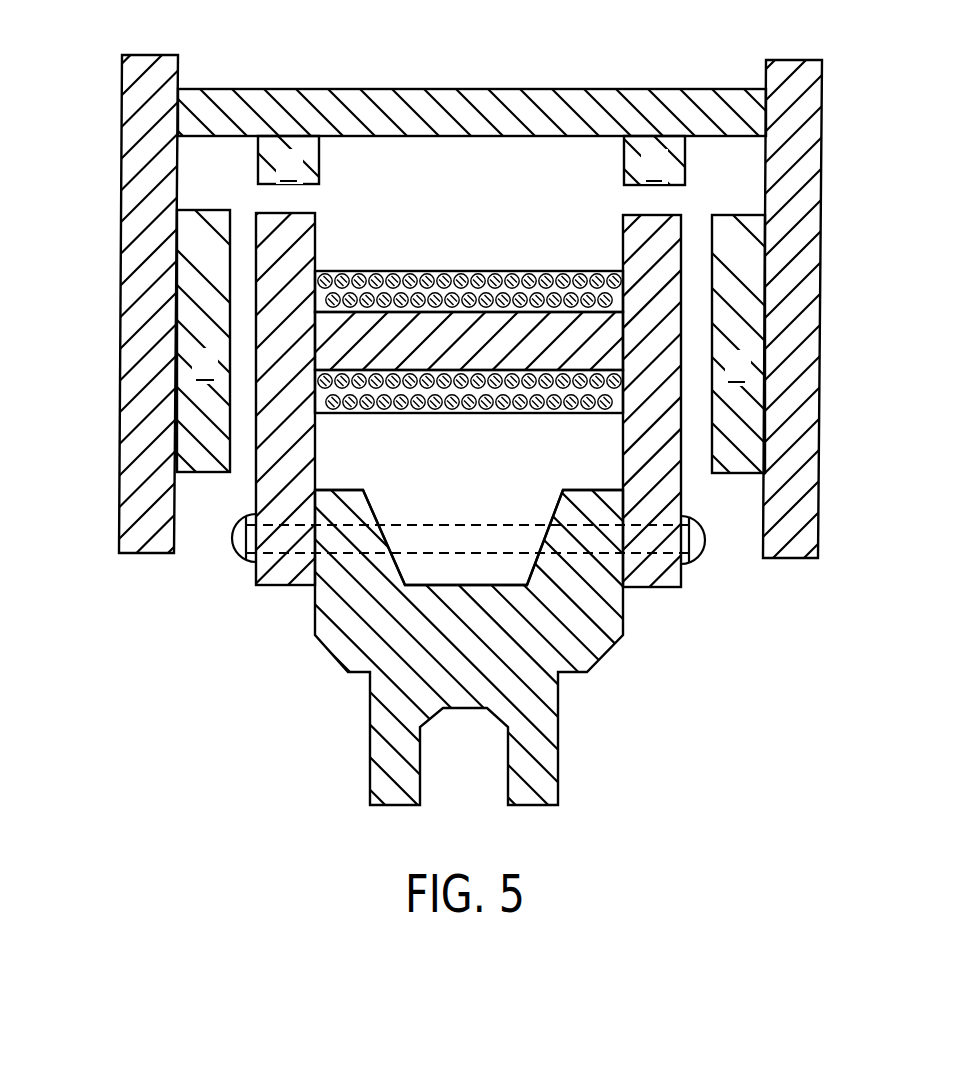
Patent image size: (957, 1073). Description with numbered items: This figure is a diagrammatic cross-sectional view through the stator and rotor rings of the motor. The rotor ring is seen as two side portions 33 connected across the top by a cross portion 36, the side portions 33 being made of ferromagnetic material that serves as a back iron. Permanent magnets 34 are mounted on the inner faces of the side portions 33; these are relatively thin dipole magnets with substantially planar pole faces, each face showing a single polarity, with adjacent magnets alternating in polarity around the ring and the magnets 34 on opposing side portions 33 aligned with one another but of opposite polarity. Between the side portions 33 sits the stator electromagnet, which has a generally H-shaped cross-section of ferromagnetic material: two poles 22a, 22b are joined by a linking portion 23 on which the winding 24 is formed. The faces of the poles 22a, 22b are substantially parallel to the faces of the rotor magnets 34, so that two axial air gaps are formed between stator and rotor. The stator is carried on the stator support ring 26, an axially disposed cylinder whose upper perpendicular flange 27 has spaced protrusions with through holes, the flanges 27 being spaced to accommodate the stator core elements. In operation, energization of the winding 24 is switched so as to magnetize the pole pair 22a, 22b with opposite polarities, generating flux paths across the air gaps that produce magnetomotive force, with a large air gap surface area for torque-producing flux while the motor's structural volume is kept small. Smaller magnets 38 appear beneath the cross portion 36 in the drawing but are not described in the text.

The pole 22a is at (316, 230).
The pole 22b is at (623, 228).
The linking portion 23 is at (437, 372).
The winding 24 is at (486, 271).
The stator support ring 26 is at (558, 735).
The upper perpendicular flange 27 is at (382, 511).
The side portion 33 is at (122, 316).
The permanent magnet 34 is at (215, 210).
The cross portion 36 is at (487, 89).
The small magnet 38 is at (320, 167).